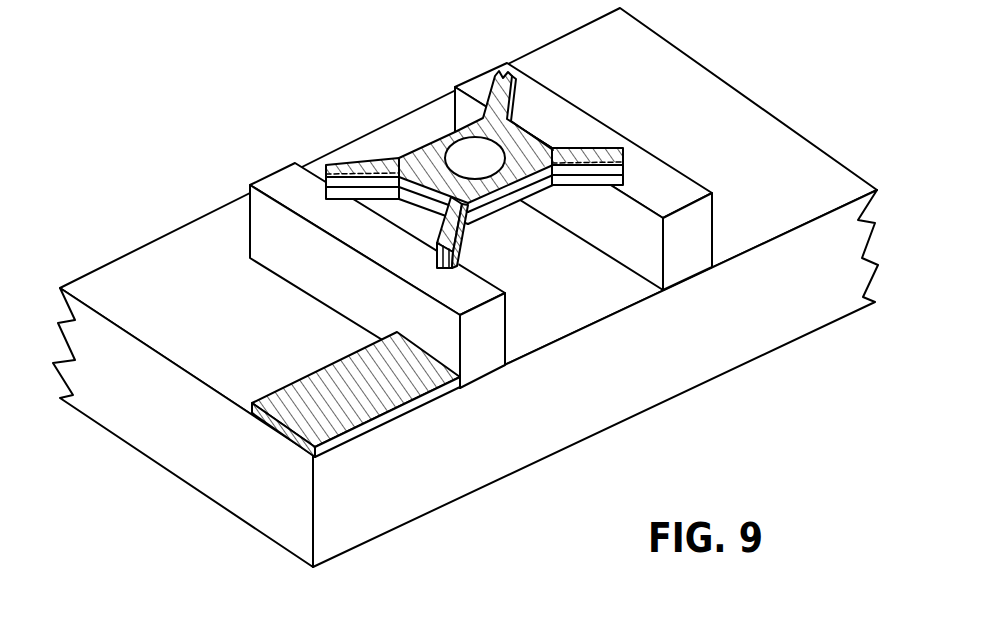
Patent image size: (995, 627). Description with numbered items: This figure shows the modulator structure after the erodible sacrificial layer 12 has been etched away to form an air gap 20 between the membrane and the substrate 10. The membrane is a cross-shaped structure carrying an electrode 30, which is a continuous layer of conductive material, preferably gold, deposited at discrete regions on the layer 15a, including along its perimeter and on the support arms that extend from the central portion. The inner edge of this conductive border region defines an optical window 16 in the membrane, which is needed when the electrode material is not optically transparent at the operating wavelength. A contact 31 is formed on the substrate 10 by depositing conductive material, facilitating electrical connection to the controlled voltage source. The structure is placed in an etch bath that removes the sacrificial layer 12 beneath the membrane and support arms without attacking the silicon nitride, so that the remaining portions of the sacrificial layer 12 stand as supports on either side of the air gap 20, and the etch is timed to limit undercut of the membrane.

The substrate 10 is at (154, 465).
The sacrificial layer 12 is at (249, 242).
The layer 15a is at (326, 183).
The optical window 16 is at (460, 156).
The air gap 20 is at (566, 294).
The electrode 30 is at (436, 168).
The contact 31 is at (303, 396).